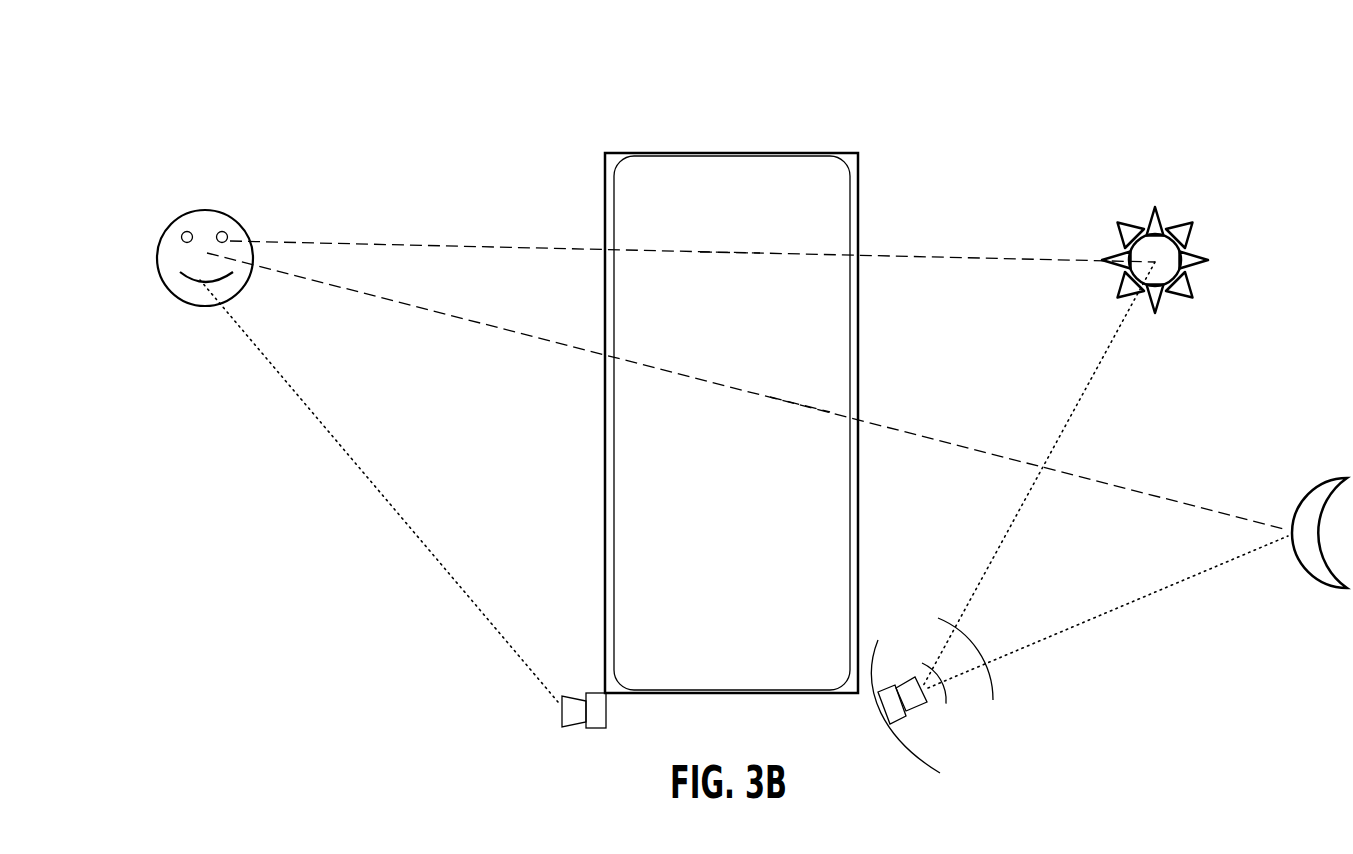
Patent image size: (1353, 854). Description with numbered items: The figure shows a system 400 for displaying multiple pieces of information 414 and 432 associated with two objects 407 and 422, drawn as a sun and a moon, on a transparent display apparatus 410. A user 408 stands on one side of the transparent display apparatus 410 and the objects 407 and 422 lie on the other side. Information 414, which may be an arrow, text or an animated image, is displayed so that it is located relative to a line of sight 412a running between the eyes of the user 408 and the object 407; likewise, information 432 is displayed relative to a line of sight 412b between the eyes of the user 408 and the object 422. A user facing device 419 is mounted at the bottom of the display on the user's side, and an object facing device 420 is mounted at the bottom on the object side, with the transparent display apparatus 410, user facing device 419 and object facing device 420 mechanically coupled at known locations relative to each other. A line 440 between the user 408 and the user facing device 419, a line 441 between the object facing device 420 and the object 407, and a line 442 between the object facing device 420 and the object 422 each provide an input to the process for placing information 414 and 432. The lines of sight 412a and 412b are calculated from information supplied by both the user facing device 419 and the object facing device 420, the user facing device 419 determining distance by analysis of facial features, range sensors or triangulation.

The system 400 is at (214, 166).
The user 408 is at (240, 224).
The transparent display apparatus 410 is at (758, 484).
The line of sight 412a is at (440, 247).
The line of sight 412b is at (447, 312).
The information 414 is at (724, 247).
The information 432 is at (795, 397).
The object 407 is at (1165, 233).
The object 422 is at (1300, 494).
The user facing device 419 is at (603, 730).
The object facing device 420 is at (903, 744).
The line 440 is at (422, 545).
The line 441 is at (990, 567).
The line 442 is at (1048, 637).